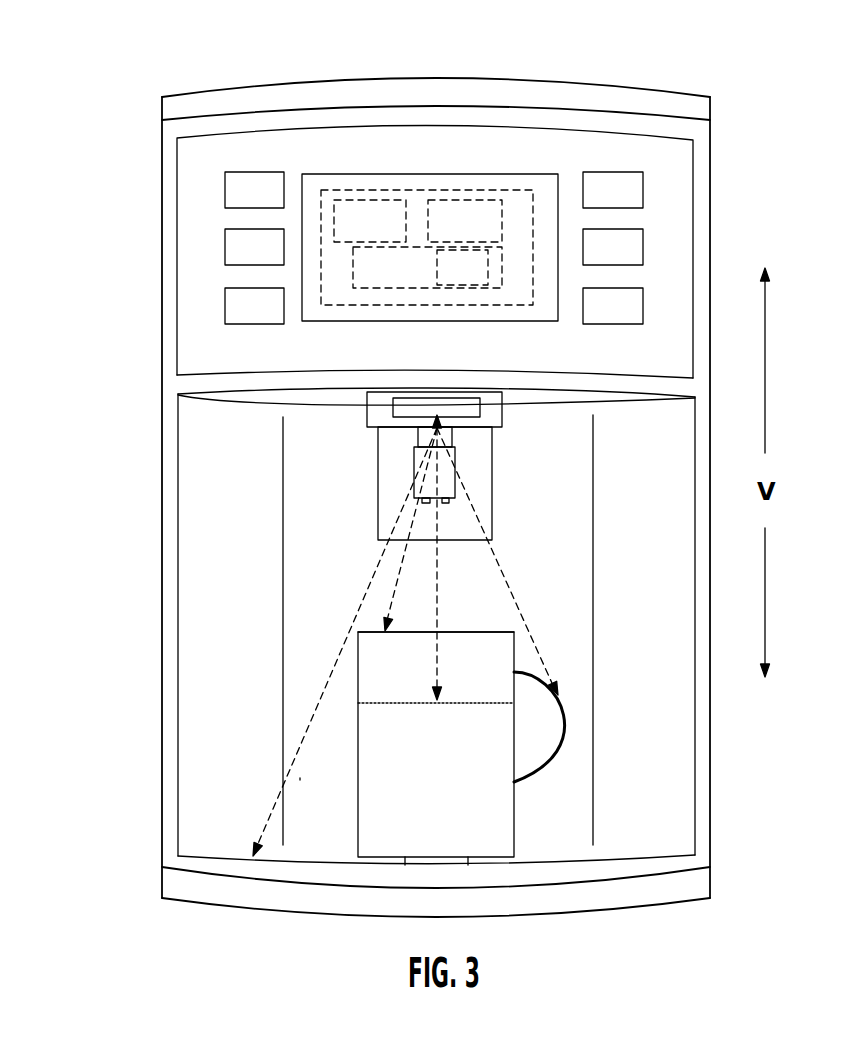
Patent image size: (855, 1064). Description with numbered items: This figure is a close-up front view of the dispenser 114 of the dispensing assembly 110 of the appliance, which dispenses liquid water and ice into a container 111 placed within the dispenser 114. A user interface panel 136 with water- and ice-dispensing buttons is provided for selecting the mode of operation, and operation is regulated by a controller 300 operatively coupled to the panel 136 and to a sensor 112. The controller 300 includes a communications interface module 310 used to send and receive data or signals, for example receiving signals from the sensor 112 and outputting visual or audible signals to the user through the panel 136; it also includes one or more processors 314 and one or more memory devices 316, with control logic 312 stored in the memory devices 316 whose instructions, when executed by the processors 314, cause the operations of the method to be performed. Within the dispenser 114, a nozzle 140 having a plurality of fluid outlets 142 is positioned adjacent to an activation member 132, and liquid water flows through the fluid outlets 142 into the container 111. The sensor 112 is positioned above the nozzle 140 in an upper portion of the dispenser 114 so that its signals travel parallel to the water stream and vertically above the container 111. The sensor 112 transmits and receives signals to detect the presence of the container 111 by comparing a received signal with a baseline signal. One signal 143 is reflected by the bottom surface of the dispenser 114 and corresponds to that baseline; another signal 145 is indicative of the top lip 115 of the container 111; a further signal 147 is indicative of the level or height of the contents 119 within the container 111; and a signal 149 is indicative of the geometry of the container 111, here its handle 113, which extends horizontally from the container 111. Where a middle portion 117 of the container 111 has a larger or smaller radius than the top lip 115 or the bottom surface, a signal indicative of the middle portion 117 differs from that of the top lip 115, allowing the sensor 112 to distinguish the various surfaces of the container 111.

The dispensing assembly 110 is at (120, 55).
The controller 300 is at (430, 175).
The communications interface module 310 is at (388, 234).
The control logic 312 is at (478, 281).
The processors 314 is at (481, 234).
The memory devices 316 is at (412, 281).
The user interface panel 136 is at (195, 213).
The sensor 112 is at (393, 408).
The activation member 132 is at (392, 488).
The nozzle 140 is at (455, 477).
The fluid outlets 142 is at (421, 510).
The signal 143 is at (262, 828).
The signal 145 is at (395, 588).
The signal 147 is at (440, 660).
The signal 149 is at (527, 625).
The top lip 115 is at (350, 635).
The middle portion 117 is at (350, 733).
The contents 119 is at (477, 703).
The handle 113 is at (545, 755).
The container 111 is at (352, 823).
The dispenser 114 is at (300, 778).